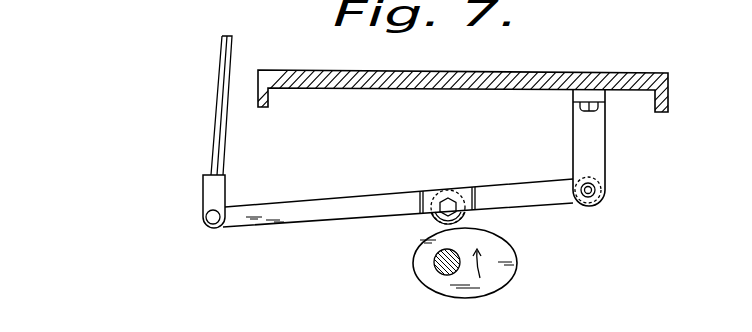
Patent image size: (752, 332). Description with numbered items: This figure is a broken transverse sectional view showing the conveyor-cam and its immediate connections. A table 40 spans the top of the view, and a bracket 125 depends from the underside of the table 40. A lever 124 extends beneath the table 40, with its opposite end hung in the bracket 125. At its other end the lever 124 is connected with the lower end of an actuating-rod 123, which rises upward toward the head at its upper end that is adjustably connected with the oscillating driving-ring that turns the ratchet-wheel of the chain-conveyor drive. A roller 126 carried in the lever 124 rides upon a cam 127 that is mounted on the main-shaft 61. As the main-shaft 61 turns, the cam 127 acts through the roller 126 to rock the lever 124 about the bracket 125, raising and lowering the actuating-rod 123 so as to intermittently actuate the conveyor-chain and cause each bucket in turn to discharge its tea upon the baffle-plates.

The table 40 is at (507, 80).
The actuating-rod 123 is at (216, 137).
The lever 124 is at (348, 185).
The bracket 125 is at (592, 148).
The roller 126 is at (432, 222).
The cam 127 is at (503, 252).
The main-shaft 61 is at (433, 267).